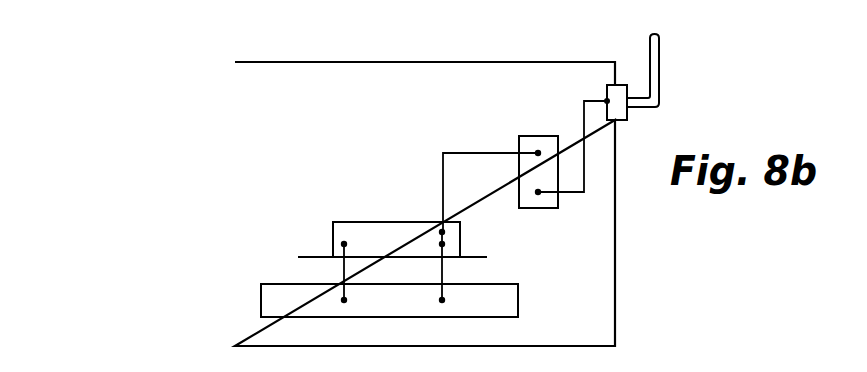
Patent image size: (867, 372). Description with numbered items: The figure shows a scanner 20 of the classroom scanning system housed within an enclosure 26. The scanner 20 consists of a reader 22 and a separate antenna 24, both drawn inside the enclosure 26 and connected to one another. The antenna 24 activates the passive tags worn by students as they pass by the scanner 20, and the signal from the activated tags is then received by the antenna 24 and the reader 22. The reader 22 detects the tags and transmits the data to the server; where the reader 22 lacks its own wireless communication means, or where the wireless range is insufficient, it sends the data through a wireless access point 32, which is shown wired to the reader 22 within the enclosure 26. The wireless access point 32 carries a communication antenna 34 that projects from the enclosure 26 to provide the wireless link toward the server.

The scanner 20 is at (156, 188).
The reader 22 is at (376, 221).
The antenna 24 is at (278, 283).
The enclosure 26 is at (615, 300).
The wireless access point 32 is at (541, 135).
The communication antenna 34 is at (660, 92).